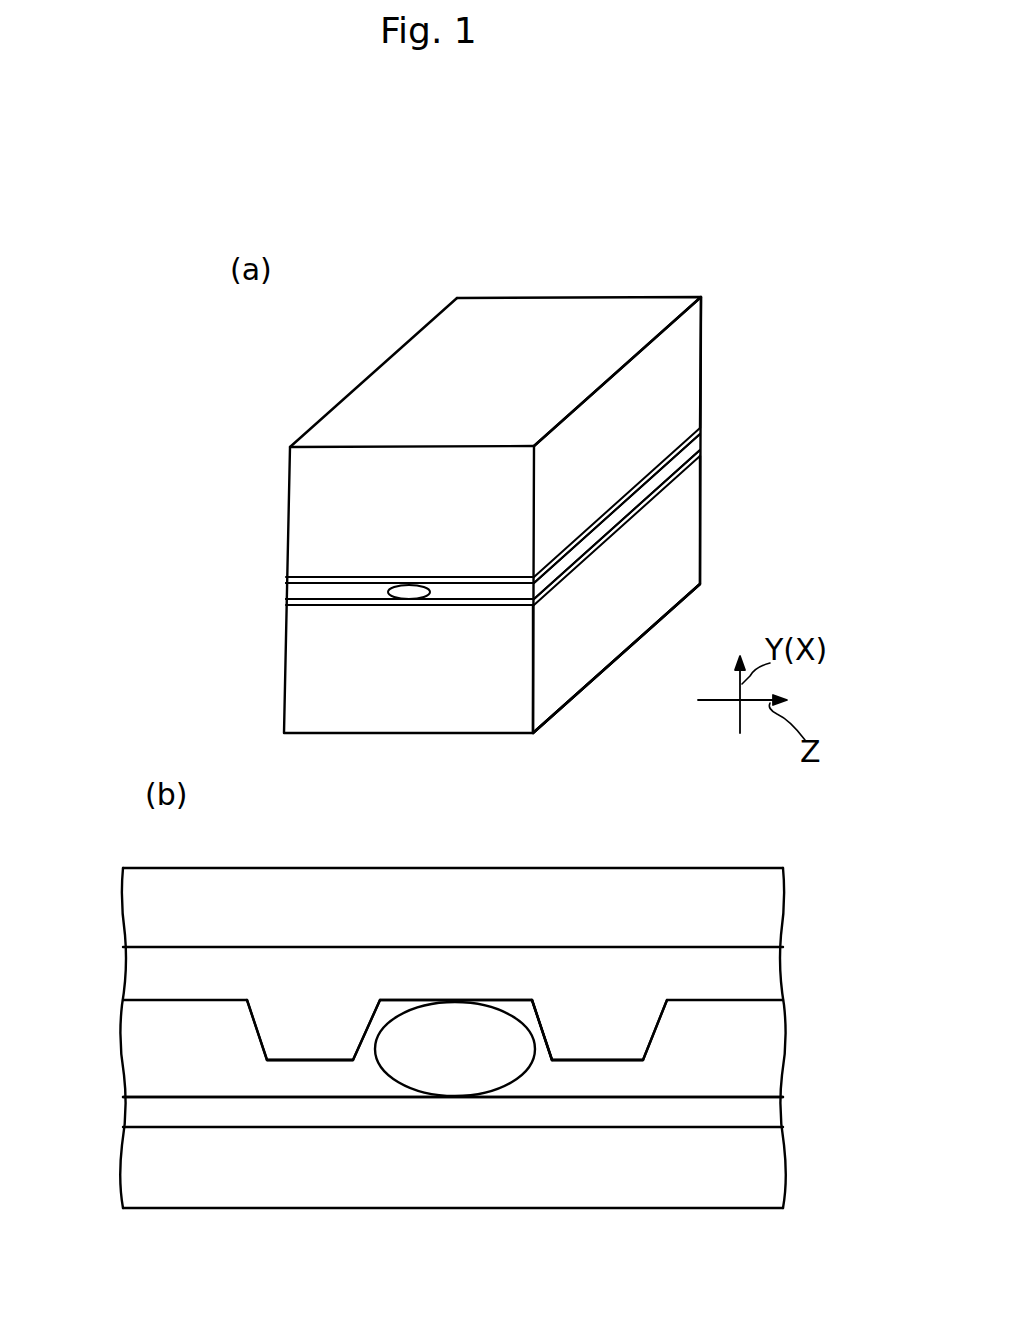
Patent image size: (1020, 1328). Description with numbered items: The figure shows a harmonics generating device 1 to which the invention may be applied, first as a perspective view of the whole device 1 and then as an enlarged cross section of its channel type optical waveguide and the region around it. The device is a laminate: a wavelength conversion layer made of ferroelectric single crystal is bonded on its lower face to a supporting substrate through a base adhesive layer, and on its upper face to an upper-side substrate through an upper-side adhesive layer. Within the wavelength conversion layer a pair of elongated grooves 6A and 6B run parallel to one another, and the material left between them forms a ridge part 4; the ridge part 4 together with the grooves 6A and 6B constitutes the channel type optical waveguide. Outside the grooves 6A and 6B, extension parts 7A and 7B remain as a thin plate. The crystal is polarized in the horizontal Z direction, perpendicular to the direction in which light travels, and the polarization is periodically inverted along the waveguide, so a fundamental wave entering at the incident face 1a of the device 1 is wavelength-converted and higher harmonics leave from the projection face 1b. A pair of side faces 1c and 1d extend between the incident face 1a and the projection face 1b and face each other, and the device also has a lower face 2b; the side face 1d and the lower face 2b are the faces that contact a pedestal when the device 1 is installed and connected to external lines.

The harmonics generating device 1 is at (728, 313).
The incident face 1a is at (443, 462).
The projection face 1b is at (590, 296).
The side face 1c is at (668, 348).
The side face 1d is at (383, 364).
The lower face of device 2b is at (597, 675).
The ridge part 4 is at (537, 998).
The elongated groove 6A is at (595, 1058).
The elongated groove 6B is at (310, 1058).
The extension part 7A is at (697, 1010).
The extension part 7B is at (205, 1015).